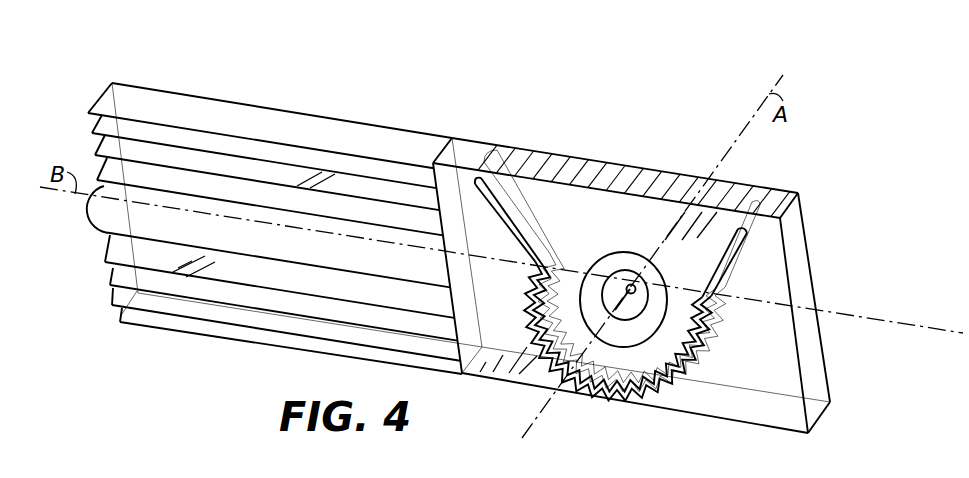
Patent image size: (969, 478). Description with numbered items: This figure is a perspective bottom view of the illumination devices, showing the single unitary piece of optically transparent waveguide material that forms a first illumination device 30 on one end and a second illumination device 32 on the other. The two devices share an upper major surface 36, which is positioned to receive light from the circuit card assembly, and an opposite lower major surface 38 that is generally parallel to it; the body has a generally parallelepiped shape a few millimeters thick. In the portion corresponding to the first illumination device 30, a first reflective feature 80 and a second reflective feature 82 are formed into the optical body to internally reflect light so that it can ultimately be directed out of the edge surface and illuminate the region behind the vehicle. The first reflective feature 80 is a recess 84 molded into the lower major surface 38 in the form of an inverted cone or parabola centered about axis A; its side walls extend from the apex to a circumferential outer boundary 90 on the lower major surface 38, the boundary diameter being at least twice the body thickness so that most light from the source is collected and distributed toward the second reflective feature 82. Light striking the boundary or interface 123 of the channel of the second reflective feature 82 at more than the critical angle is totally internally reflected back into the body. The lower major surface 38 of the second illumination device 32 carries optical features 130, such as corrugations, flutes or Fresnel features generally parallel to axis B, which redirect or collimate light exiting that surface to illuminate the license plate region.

The first illumination device 30 is at (800, 164).
The second illumination device 32 is at (452, 111).
The upper major surface 36 is at (803, 216).
The lower major surface 38 is at (480, 366).
The first reflective feature 80 is at (623, 244).
The second reflective feature 82 is at (758, 258).
The recess 84 is at (657, 315).
The circumferential outer boundary 90 is at (653, 260).
The boundary or interface 123 is at (514, 222).
The optical features 130 is at (106, 284).